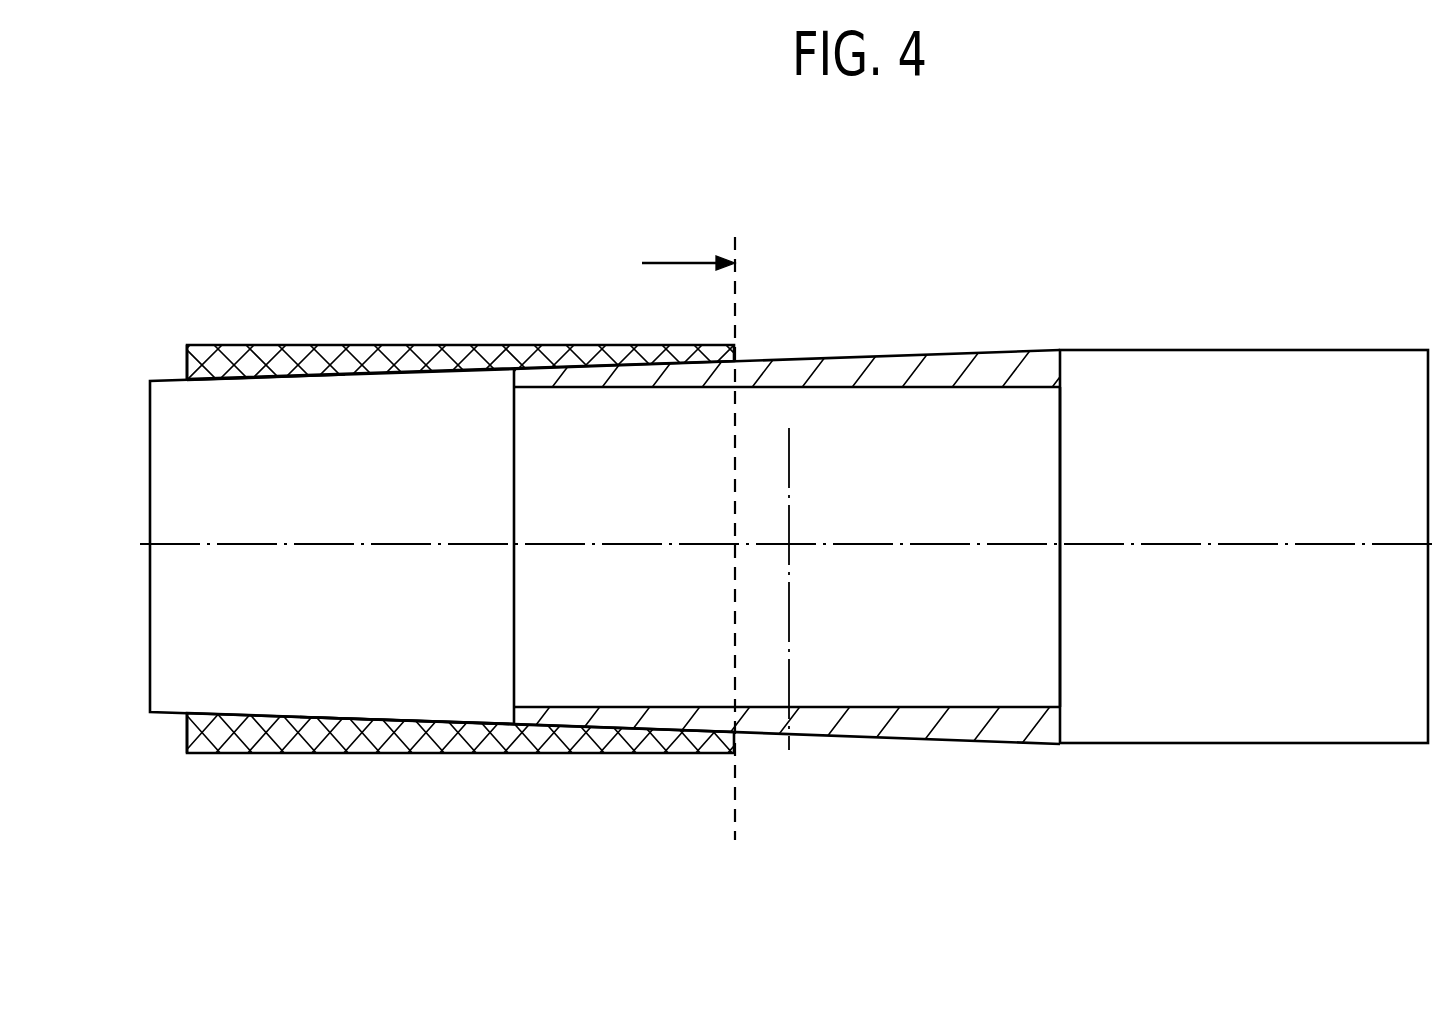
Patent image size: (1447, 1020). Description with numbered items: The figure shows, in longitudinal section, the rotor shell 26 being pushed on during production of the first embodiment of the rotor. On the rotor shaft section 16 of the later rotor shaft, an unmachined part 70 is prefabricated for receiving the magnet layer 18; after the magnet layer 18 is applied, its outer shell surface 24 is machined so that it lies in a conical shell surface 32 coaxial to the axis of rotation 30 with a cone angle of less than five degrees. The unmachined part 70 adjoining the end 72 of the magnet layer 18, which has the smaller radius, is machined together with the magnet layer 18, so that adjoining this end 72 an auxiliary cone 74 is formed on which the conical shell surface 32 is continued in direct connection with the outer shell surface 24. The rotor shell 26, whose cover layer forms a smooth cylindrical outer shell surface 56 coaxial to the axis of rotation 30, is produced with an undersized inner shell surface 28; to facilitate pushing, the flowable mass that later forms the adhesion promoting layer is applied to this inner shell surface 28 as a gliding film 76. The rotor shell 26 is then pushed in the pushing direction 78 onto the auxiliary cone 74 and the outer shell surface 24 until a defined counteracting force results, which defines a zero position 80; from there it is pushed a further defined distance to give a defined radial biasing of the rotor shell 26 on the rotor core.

The rotor shaft section 16 is at (1053, 668).
The magnet layer 18 is at (988, 359).
The outer shell surface 24 is at (903, 353).
The rotor shell 26 is at (492, 333).
The inner shell surface 28 is at (405, 375).
The axis of rotation 30 is at (677, 545).
The conical shell surface 32 is at (165, 378).
The cylindrical outer shell surface 56 is at (338, 753).
The unmachined part 70 is at (1206, 391).
The end of the magnet layer 72 is at (510, 382).
The auxiliary cone 74 is at (437, 680).
The gliding film 76 is at (345, 373).
The pushing direction 78 is at (675, 262).
The zero position 80 is at (735, 305).